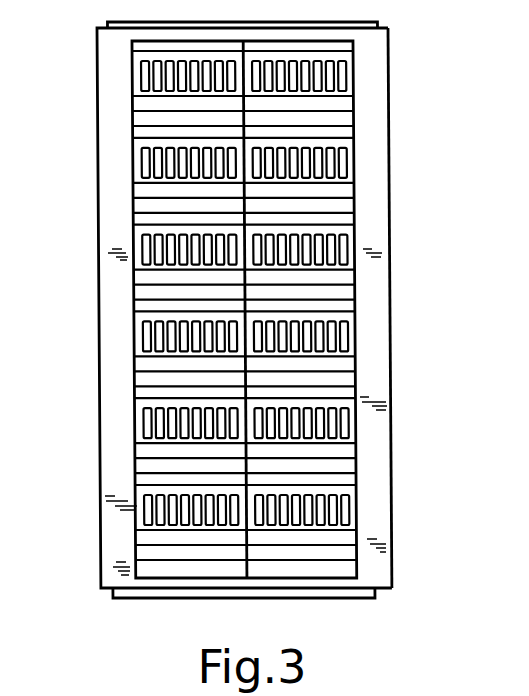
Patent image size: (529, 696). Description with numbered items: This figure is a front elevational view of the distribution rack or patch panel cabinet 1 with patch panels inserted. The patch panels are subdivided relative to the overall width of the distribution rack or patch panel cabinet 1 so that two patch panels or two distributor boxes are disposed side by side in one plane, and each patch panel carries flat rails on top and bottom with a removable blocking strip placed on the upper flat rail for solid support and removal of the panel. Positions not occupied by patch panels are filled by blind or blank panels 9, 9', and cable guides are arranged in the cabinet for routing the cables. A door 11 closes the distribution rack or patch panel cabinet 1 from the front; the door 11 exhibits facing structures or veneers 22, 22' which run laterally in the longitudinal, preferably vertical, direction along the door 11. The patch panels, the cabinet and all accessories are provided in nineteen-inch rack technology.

The distribution rack or patch panel cabinet 1 is at (399, 312).
The blind or blank panel 9 is at (349, 129).
The blind or blank panel 9' is at (138, 128).
The door 11 is at (400, 510).
The facing structure or veneer 22 is at (419, 555).
The facing structure or veneer 22' is at (77, 562).